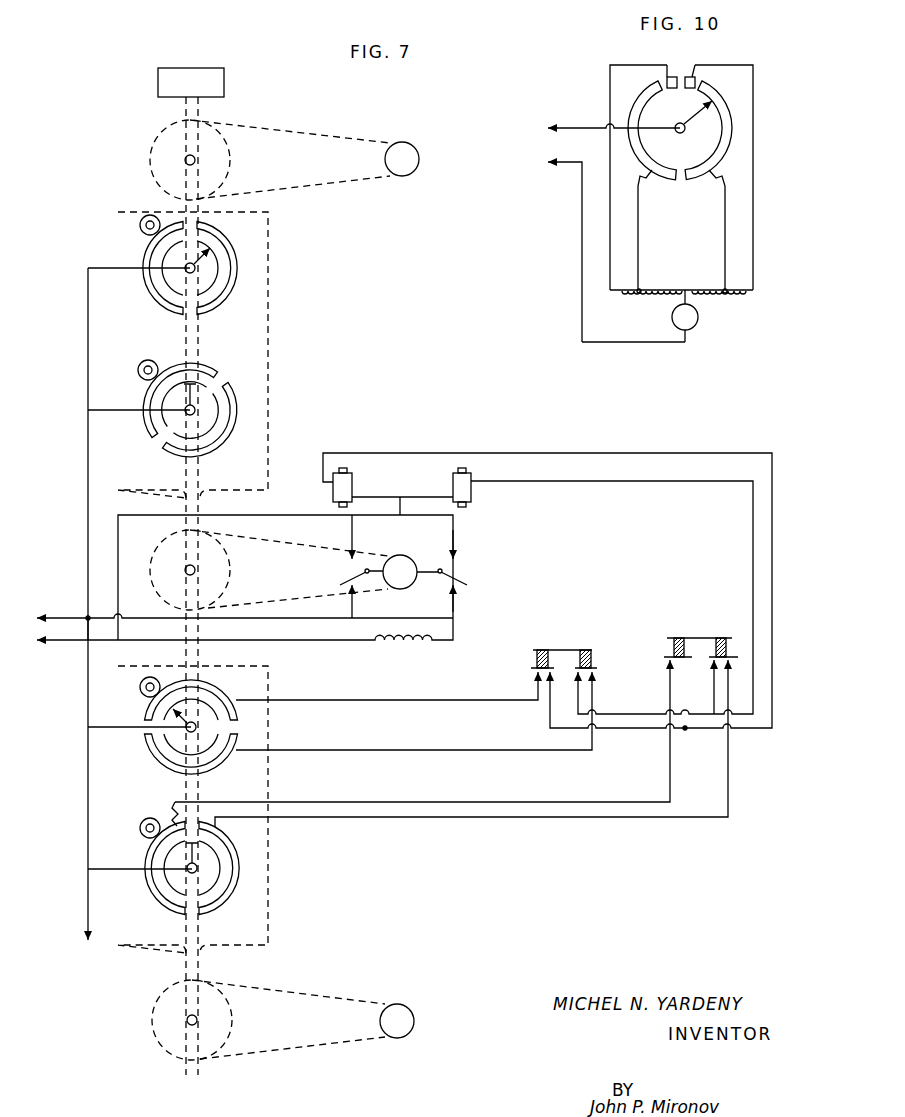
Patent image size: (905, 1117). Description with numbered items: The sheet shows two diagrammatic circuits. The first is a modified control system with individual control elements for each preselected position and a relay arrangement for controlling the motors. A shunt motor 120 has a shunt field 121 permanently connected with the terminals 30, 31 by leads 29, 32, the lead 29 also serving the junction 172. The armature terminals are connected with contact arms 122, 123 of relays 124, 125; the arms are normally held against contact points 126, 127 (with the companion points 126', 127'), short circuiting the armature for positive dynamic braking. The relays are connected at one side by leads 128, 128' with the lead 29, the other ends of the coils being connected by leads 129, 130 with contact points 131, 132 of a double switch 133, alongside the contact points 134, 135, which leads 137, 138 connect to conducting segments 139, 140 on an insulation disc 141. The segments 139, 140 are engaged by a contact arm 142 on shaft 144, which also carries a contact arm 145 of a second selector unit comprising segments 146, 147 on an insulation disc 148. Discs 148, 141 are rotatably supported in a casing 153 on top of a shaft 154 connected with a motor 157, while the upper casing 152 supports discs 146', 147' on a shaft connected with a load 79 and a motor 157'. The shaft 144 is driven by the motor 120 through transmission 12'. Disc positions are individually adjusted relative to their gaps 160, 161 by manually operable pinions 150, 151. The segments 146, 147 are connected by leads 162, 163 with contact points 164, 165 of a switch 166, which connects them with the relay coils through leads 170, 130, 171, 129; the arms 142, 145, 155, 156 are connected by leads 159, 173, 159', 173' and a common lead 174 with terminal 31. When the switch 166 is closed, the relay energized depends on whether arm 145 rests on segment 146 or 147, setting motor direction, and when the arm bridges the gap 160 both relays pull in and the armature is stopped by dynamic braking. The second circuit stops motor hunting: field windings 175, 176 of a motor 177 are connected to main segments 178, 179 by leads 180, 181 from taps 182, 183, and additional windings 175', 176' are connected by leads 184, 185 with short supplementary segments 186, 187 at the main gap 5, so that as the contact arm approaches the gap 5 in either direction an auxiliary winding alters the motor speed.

In FIG. 7, the load 79 is at (224, 82).
In FIG. 7, the shaft 154 is at (200, 350).
In FIG. 7, the motor 157 is at (410, 1006).
In FIG. 7, the motor 157' is at (426, 159).
In FIG. 7, the upper casing 152 is at (268, 345).
In FIG. 7, the disc 147' is at (199, 265).
In FIG. 7, the contact arm 156 is at (213, 258).
In FIG. 7, the lead 173' is at (139, 286).
In FIG. 7, the disc 146' is at (192, 417).
In FIG. 7, the contact arm 155 is at (194, 388).
In FIG. 7, the lead 159' is at (139, 429).
In FIG. 7, the common lead 174 is at (88, 790).
In FIG. 7, the lead 29 is at (323, 642).
In FIG. 10, the lead 29 is at (582, 248).
In FIG. 7, the terminal 30 is at (74, 656).
In FIG. 10, the terminal 30 is at (570, 165).
In FIG. 7, the terminal 31 is at (62, 605).
In FIG. 10, the terminal 31 is at (608, 110).
In FIG. 7, the lead 32 is at (290, 622).
In FIG. 10, the lead 32 is at (655, 128).
In FIG. 7, the conductor 172 is at (85, 646).
In FIG. 7, the shunt field 121 is at (395, 648).
In FIG. 7, the transmission 12' is at (269, 570).
In FIG. 7, the shunt motor 120 is at (402, 557).
In FIG. 7, the contact arm 122 is at (342, 582).
In FIG. 7, the contact arm 123 is at (465, 584).
In FIG. 7, the contact point 126 is at (374, 601).
In FIG. 7, the contact 126' is at (334, 537).
In FIG. 7, the contact point 127 is at (474, 598).
In FIG. 7, the contact 127' is at (476, 543).
In FIG. 7, the lead 128 is at (402, 492).
In FIG. 7, the lead 128' is at (246, 507).
In FIG. 7, the relay 124 is at (333, 490).
In FIG. 7, the relay 125 is at (471, 492).
In FIG. 7, the lead 129 is at (660, 446).
In FIG. 7, the lead 130 is at (596, 481).
In FIG. 7, the switch 166 is at (558, 650).
In FIG. 7, the contact point 164 is at (536, 678).
In FIG. 7, the lead 171 is at (552, 682).
In FIG. 7, the lead 170 is at (580, 686).
In FIG. 7, the contact point 165 is at (592, 698).
In FIG. 7, the lead 162 is at (440, 700).
In FIG. 7, the lead 163 is at (418, 750).
In FIG. 7, the double switch 133 is at (687, 672).
In FIG. 7, the contact point 135 is at (668, 680).
In FIG. 7, the contact point 131 is at (722, 630).
In FIG. 7, the contact point 134 is at (730, 676).
In FIG. 7, the contact point 132 is at (732, 690).
In FIG. 7, the lead 137 is at (547, 802).
In FIG. 7, the lead 138 is at (572, 817).
In FIG. 7, the casing 153 is at (268, 918).
In FIG. 7, the segment 146 is at (206, 697).
In FIG. 7, the segment 147 is at (200, 763).
In FIG. 7, the insulation disc 148 is at (156, 758).
In FIG. 7, the contact arm 145 is at (185, 712).
In FIG. 10, the contact arm 145 is at (704, 110).
In FIG. 7, the pinion 150 is at (148, 676).
In FIG. 7, the gap 160 is at (239, 727).
In FIG. 7, the lead 173 is at (116, 746).
In FIG. 7, the shaft 144 is at (186, 793).
In FIG. 7, the conducting segment 139 is at (160, 892).
In FIG. 7, the conducting segment 140 is at (226, 895).
In FIG. 7, the insulation disc 141 is at (228, 850).
In FIG. 7, the contact arm 142 is at (194, 858).
In FIG. 7, the gap 161 is at (200, 914).
In FIG. 7, the pinion 151 is at (144, 838).
In FIG. 7, the lead 159 is at (119, 886).
In FIG. 10, the lead 184 is at (610, 190).
In FIG. 10, the lead 185 is at (753, 200).
In FIG. 10, the supplementary segment 186 is at (672, 77).
In FIG. 10, the supplementary segment 187 is at (693, 77).
In FIG. 10, the main segment 178 is at (640, 100).
In FIG. 10, the main segment 179 is at (734, 125).
In FIG. 10, the gap 5 is at (677, 100).
In FIG. 10, the lead 180 is at (640, 222).
In FIG. 10, the lead 181 is at (725, 215).
In FIG. 10, the field winding 175 is at (681, 279).
In FIG. 10, the field winding 176 is at (717, 279).
In FIG. 10, the additional winding 175' is at (614, 307).
In FIG. 10, the additional winding 176' is at (768, 300).
In FIG. 10, the tap 182 is at (640, 294).
In FIG. 10, the tap 183 is at (725, 294).
In FIG. 10, the motor 177 is at (694, 327).